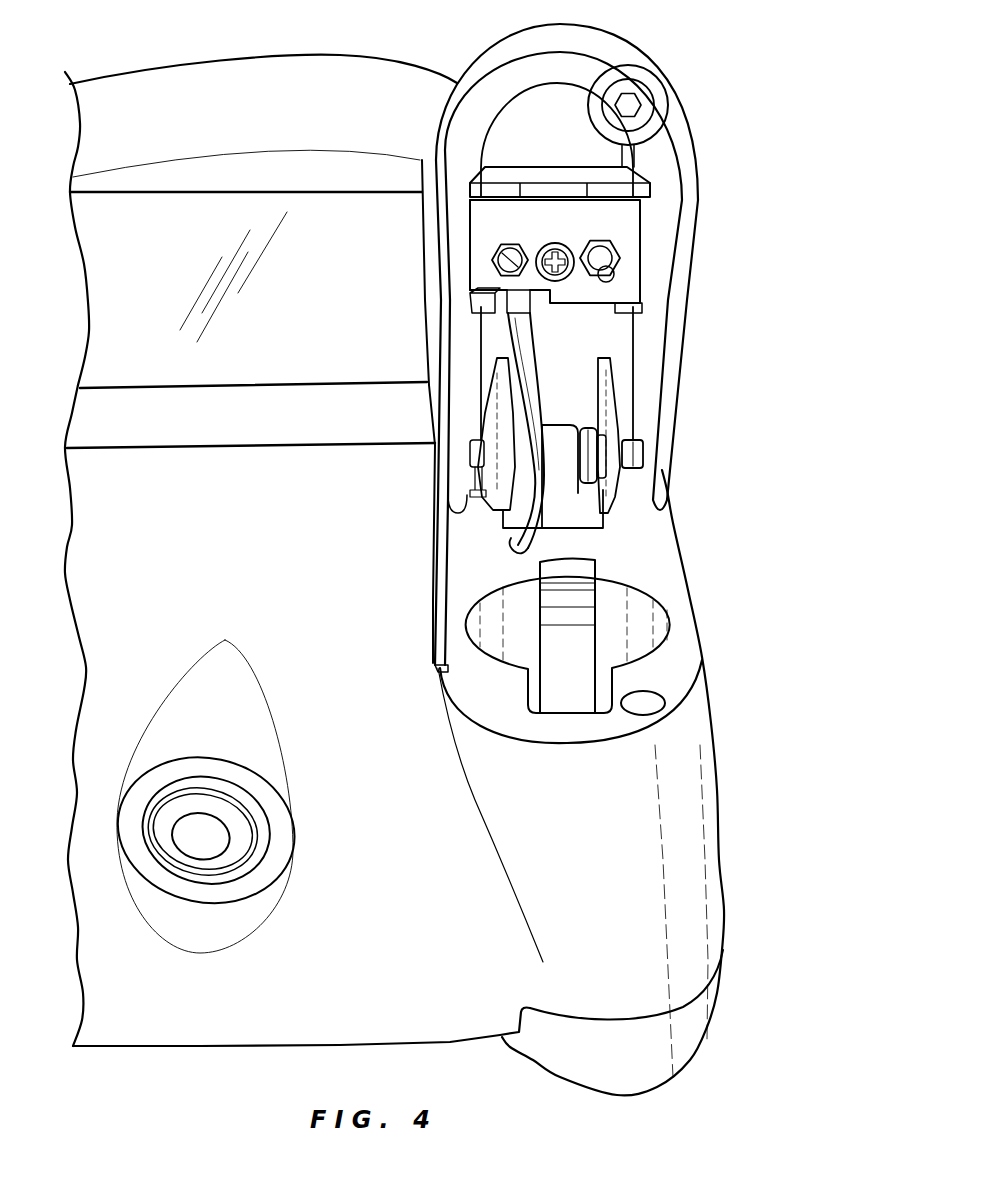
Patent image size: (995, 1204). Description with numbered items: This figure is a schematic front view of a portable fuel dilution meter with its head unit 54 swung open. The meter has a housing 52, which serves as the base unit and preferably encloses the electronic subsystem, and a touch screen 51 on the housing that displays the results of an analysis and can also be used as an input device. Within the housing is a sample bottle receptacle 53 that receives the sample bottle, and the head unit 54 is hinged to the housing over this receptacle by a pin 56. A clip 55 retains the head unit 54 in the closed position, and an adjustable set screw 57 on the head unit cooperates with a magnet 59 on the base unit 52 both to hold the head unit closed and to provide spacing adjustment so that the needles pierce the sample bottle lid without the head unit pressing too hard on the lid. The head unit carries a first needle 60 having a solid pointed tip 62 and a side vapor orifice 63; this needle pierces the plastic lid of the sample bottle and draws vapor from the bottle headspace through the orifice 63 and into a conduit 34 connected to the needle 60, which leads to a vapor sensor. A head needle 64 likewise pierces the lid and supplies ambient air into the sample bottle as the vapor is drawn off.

The conduit 34 is at (523, 352).
The touch screen 51 is at (176, 259).
The housing 52 is at (302, 541).
The sample bottle receptacle 53 is at (643, 634).
The head unit 54 is at (685, 148).
The clip 55 is at (572, 577).
The pin 56 is at (633, 457).
The adjustable set screw 57 is at (630, 101).
The magnet 59 is at (643, 703).
The first needle 60 is at (508, 262).
The solid pointed tip 62 is at (510, 266).
The side vapor orifice 63 is at (557, 253).
The head needle 64 is at (602, 258).